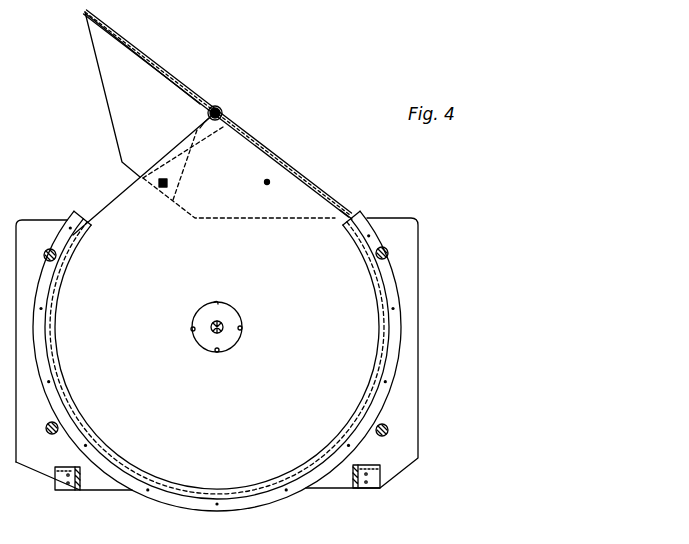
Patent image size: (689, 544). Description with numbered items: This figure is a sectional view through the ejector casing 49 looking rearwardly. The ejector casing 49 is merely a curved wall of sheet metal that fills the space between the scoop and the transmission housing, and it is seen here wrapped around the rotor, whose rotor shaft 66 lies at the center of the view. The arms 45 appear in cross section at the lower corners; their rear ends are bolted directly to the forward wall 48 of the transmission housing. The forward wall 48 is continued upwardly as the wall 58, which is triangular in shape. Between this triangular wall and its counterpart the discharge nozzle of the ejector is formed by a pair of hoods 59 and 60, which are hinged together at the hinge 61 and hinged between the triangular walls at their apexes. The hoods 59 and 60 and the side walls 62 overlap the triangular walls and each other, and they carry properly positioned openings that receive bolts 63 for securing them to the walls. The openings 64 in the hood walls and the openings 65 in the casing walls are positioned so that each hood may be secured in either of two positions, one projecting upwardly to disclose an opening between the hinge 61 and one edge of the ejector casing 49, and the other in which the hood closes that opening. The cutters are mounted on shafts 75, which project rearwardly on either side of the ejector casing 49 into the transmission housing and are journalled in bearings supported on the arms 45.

The arms 45 is at (66, 474).
The forward wall 48 is at (217, 354).
The ejector casing 49 is at (58, 295).
The upward continuation of wall 58 is at (247, 157).
The hood 59 is at (162, 67).
The hood 60 is at (292, 181).
The hinge 61 is at (222, 112).
The side walls 62 is at (144, 123).
The bolts 63 is at (160, 189).
The openings in hood walls 64 is at (127, 76).
The openings in casing walls 65 is at (267, 186).
The rotor shaft 66 is at (210, 333).
The shafts 75 is at (45, 253).